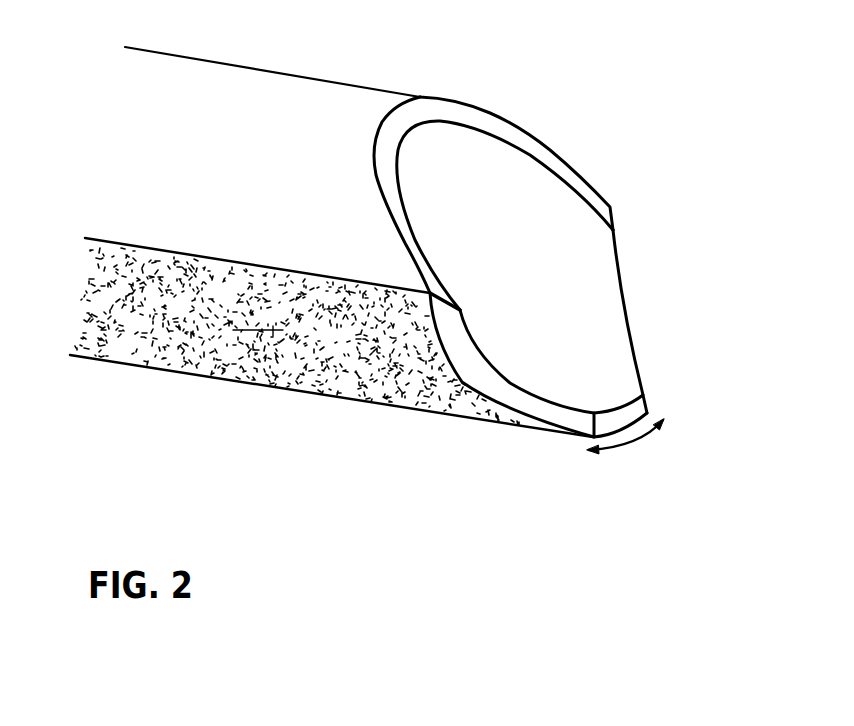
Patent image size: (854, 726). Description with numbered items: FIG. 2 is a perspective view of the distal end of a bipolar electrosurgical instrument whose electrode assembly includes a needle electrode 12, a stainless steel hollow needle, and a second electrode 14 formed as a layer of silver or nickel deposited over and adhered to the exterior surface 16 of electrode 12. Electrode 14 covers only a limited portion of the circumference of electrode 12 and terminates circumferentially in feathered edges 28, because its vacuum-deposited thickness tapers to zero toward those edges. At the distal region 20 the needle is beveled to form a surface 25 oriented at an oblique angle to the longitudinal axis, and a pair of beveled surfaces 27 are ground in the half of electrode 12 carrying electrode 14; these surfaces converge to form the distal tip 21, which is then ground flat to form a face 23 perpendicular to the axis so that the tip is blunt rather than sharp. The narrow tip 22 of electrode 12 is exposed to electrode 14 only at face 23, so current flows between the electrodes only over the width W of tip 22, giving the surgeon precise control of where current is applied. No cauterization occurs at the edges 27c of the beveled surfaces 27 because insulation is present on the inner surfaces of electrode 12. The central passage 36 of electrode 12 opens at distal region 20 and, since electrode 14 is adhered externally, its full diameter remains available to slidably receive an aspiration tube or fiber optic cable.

The electrode 12 is at (323, 82).
The second electrode 14 is at (273, 367).
The exterior surface 16 is at (192, 153).
The distal region 20 is at (638, 125).
The distal tip 21 is at (663, 405).
The tip 22 is at (622, 283).
The face 23 is at (620, 417).
The beveled surface 25 is at (393, 145).
The beveled surfaces 27 is at (455, 322).
The edges 27c is at (489, 362).
The edges 28 is at (233, 262).
The central passage 36 is at (502, 248).
The width W is at (634, 447).